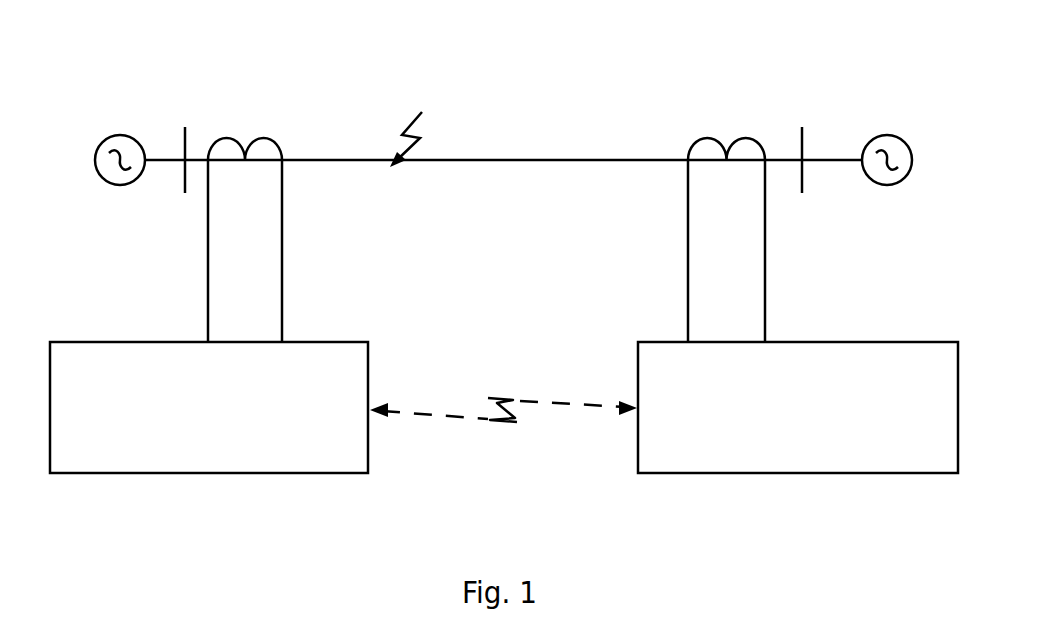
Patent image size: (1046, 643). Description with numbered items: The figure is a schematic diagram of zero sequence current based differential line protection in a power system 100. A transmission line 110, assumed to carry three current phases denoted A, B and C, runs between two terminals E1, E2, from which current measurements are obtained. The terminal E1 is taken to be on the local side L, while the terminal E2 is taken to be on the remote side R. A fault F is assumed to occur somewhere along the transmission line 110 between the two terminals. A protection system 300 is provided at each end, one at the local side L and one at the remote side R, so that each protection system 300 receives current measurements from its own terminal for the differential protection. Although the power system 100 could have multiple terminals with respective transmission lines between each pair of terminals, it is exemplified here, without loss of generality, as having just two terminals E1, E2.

The power system 100 is at (590, 76).
The transmission line 110 is at (528, 153).
The protection system 300 is at (192, 473).
The terminal E1 is at (120, 136).
The terminal E2 is at (887, 137).
The local side L is at (185, 143).
The remote side R is at (802, 143).
The fault F is at (405, 160).